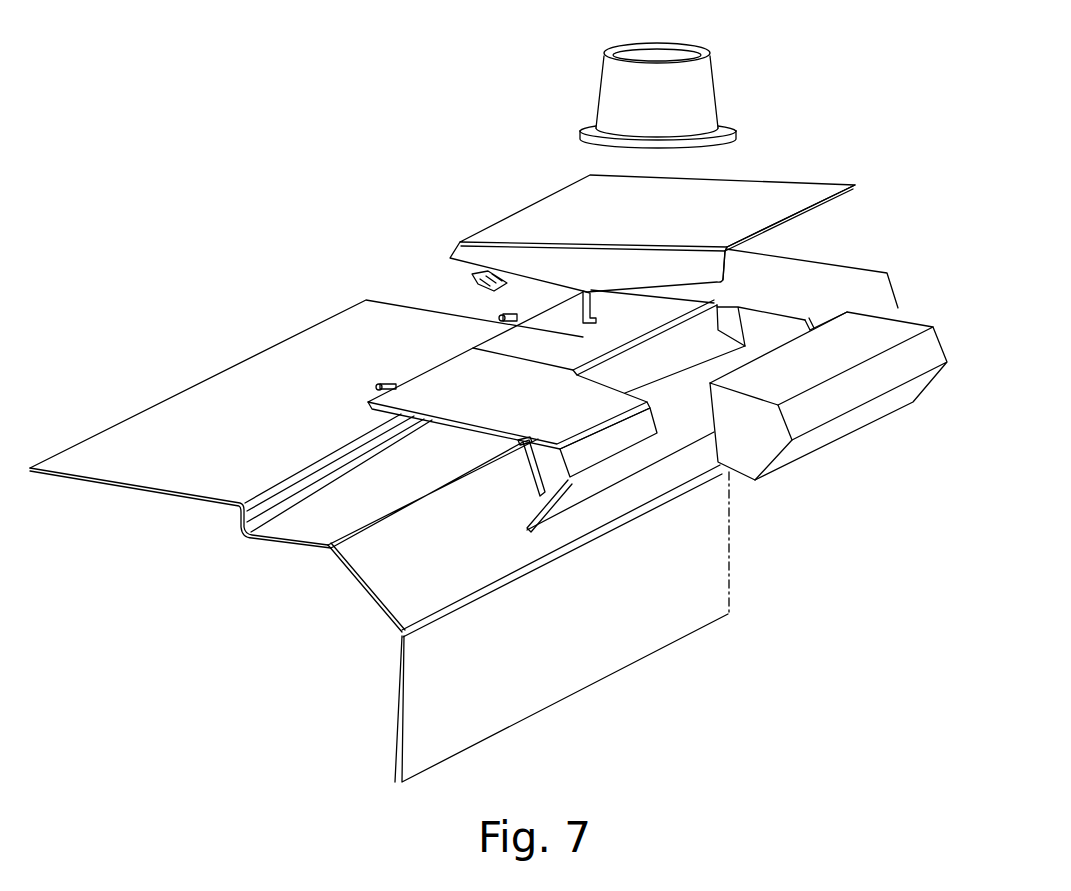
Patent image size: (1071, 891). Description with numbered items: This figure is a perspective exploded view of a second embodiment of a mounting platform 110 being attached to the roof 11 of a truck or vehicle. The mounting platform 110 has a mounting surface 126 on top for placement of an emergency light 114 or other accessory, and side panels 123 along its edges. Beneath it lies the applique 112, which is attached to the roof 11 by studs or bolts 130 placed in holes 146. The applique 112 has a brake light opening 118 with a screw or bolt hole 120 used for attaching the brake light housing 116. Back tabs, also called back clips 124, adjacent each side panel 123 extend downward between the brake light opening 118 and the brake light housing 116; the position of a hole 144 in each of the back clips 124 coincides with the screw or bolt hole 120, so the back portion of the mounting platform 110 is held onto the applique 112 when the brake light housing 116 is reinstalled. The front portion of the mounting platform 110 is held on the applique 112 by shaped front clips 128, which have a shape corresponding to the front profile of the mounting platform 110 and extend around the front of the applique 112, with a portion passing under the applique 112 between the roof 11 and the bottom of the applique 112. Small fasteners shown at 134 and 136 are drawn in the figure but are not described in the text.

The roof 11 is at (150, 457).
The mounting platform 110 is at (818, 172).
The applique 112 is at (527, 389).
The emergency light 114 is at (705, 82).
The brake light housing 116 is at (871, 352).
The brake light opening 118 is at (770, 312).
The screw or bolt hole 120 is at (706, 322).
The side panel 123 is at (850, 202).
The back tab 124 is at (583, 316).
The mounting surface 126 is at (548, 205).
The front clip 128 is at (471, 280).
The stud or bolt 130 is at (545, 488).
The clip 134 is at (524, 446).
The fastener 136 is at (508, 312).
The hole 144 is at (584, 326).
The hole 146 is at (394, 532).